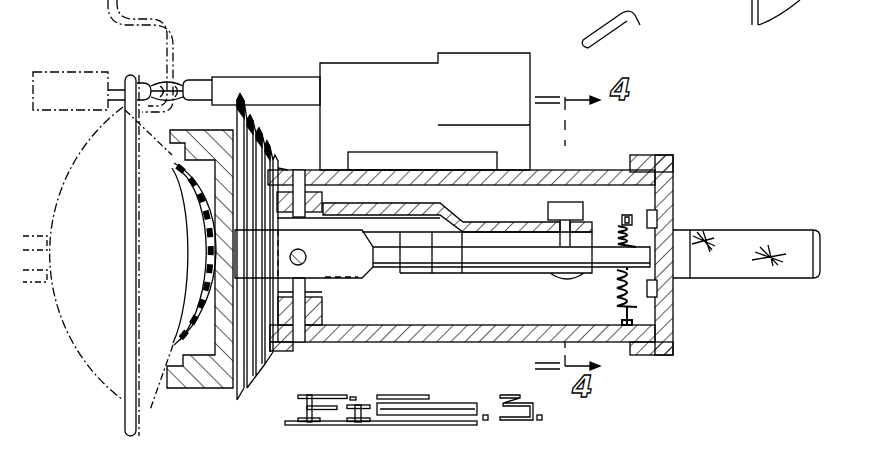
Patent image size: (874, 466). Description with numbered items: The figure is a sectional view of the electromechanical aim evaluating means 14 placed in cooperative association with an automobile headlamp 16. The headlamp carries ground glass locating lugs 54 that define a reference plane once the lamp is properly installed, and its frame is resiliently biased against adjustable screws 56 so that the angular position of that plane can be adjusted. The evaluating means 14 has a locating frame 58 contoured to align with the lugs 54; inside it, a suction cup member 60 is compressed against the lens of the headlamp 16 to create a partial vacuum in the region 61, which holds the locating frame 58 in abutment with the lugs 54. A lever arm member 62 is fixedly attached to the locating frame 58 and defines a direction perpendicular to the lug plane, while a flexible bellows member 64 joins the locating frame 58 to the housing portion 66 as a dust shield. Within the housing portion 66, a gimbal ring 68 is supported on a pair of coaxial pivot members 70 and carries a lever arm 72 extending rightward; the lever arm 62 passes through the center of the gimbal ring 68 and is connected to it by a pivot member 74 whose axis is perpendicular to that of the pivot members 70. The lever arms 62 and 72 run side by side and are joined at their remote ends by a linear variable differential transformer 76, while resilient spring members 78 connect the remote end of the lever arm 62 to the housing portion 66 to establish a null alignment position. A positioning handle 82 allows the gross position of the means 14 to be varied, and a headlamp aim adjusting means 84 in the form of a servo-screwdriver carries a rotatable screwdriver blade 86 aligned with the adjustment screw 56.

The electromechanical aim evaluating means 14 is at (484, 247).
The headlamp 16 is at (93, 377).
The ground glass locating lugs 54 is at (166, 393).
The adjustable screws 56 is at (117, 72).
The locating frame 58 is at (193, 388).
The suction cup member 60 is at (200, 295).
The partial vacuum region 61 is at (195, 237).
The lever arm member 62 is at (423, 263).
The flexible bellows member 64 is at (242, 405).
The housing portion 66 is at (622, 342).
The gimbal ring 68 is at (317, 315).
The coaxial pivot members 70 is at (300, 170).
The lever arm 72 is at (488, 222).
The pivot member 74 is at (307, 258).
The linear variable differential transformer 76 is at (575, 202).
The resilient spring members 78 is at (617, 236).
The positioning handle 82 is at (740, 230).
The headlamp aim adjusting means 84 is at (364, 62).
The rotatable screwdriver blade 86 is at (198, 80).